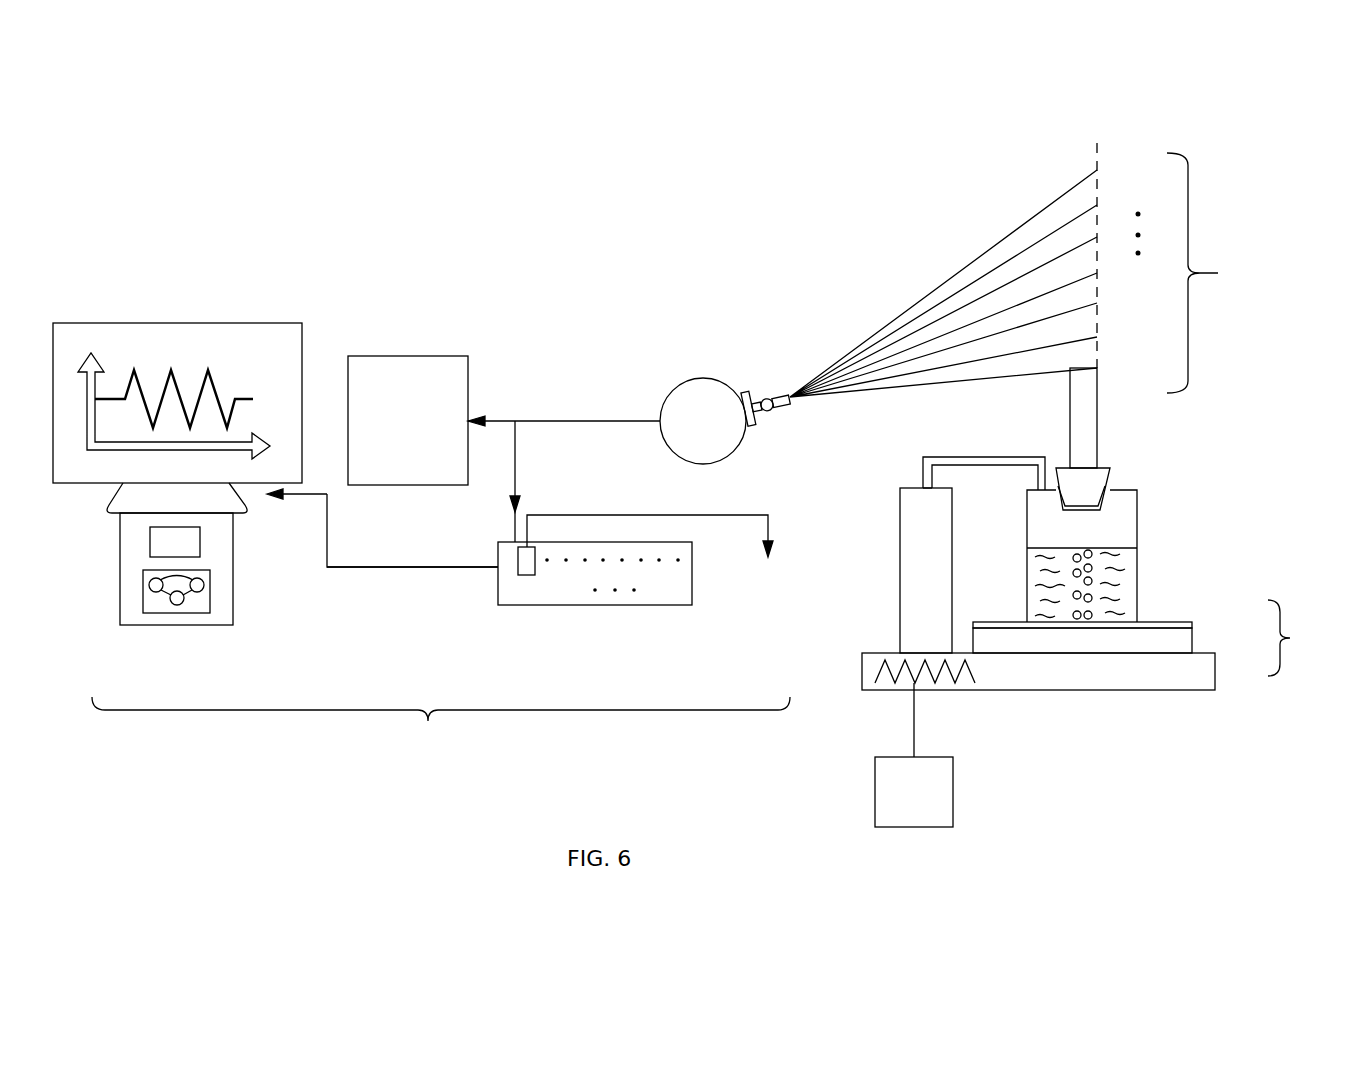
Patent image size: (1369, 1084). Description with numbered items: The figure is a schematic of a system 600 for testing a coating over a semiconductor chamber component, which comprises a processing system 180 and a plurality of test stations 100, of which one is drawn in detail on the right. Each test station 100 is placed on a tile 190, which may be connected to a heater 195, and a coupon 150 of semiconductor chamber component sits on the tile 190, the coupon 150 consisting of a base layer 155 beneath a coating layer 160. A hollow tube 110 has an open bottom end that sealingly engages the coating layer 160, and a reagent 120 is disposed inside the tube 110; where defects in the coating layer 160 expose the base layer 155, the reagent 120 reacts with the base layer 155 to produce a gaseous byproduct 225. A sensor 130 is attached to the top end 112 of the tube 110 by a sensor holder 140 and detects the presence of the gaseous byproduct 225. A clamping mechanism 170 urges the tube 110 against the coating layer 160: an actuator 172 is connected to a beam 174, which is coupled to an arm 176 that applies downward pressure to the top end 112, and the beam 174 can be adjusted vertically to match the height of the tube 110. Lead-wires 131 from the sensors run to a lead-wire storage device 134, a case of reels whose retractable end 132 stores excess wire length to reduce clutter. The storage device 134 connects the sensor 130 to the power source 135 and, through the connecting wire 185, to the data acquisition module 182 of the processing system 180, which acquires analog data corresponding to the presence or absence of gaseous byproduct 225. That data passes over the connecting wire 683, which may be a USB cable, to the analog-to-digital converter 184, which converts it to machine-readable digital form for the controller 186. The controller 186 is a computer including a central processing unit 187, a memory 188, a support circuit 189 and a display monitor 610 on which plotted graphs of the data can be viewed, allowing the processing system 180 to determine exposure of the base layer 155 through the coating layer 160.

The system 600 is at (650, 168).
The display monitor 610 is at (210, 323).
The processing system 180 is at (441, 633).
The analog-to-digital converter 184 is at (191, 553).
The controller 186 is at (210, 595).
The central processing unit 187 is at (150, 588).
The memory 188 is at (178, 606).
The support circuit 189 is at (197, 593).
The power source 135 is at (392, 467).
The connecting wire 185 is at (515, 465).
The connecting wire 683 is at (402, 566).
The data acquisition module 182 is at (513, 590).
The lead-wire storage device 134 is at (718, 390).
The retractable end 132 is at (765, 396).
The lead-wire 131 is at (825, 430).
The test station 100 is at (1240, 500).
The sensor 130 is at (1098, 470).
The sensor holder 140 is at (1105, 488).
The top end 112 is at (1130, 485).
The hollow tube 110 is at (1140, 533).
The reagent 120 is at (1047, 547).
The gaseous byproduct 225 is at (1073, 553).
The arm 176 is at (957, 457).
The beam 174 is at (923, 470).
The clamping mechanism 170 is at (893, 497).
The actuator 172 is at (915, 561).
The coating layer 160 is at (1192, 625).
The base layer 155 is at (1180, 645).
The coupon 150 is at (1308, 638).
The tile 190 is at (1120, 678).
The heater 195 is at (896, 804).